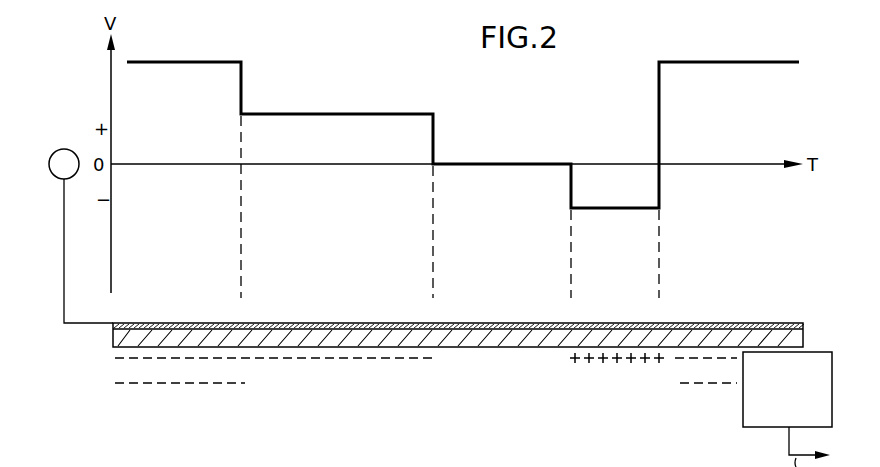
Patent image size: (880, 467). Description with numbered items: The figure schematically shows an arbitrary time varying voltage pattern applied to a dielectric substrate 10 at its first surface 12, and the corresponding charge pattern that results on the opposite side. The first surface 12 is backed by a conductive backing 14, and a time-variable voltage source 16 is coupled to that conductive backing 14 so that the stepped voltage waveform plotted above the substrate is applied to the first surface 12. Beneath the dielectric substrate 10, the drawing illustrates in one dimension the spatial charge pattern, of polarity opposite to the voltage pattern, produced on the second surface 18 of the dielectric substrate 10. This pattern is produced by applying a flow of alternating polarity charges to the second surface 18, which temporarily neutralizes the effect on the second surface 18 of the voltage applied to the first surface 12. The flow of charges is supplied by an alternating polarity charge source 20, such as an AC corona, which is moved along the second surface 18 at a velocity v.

The dielectric substrate 10 is at (113, 342).
The first surface 12 is at (113, 334).
The conductive backing 14 is at (143, 323).
The time-variable voltage source 16 is at (67, 150).
The second surface 18 is at (188, 348).
The alternating polarity charge source 20 is at (743, 403).